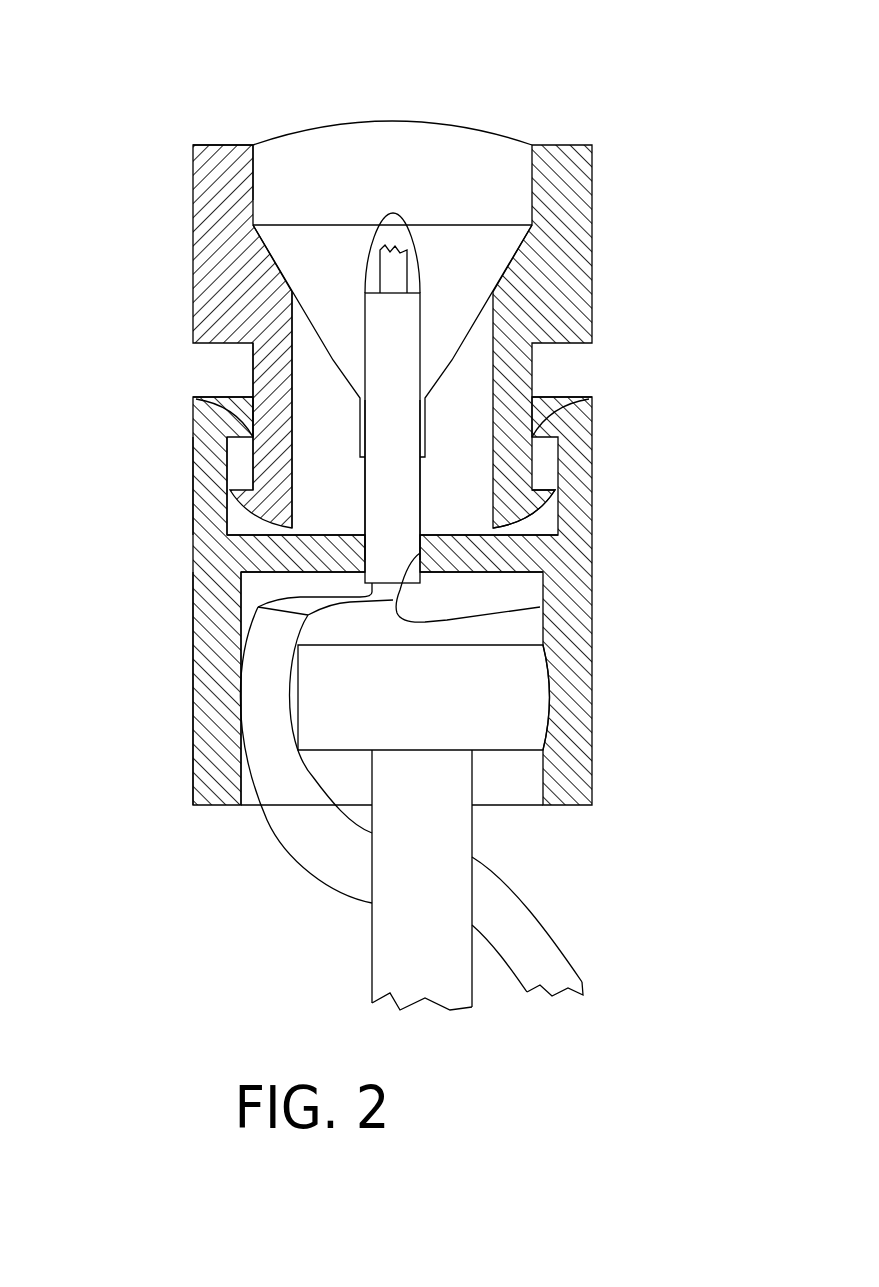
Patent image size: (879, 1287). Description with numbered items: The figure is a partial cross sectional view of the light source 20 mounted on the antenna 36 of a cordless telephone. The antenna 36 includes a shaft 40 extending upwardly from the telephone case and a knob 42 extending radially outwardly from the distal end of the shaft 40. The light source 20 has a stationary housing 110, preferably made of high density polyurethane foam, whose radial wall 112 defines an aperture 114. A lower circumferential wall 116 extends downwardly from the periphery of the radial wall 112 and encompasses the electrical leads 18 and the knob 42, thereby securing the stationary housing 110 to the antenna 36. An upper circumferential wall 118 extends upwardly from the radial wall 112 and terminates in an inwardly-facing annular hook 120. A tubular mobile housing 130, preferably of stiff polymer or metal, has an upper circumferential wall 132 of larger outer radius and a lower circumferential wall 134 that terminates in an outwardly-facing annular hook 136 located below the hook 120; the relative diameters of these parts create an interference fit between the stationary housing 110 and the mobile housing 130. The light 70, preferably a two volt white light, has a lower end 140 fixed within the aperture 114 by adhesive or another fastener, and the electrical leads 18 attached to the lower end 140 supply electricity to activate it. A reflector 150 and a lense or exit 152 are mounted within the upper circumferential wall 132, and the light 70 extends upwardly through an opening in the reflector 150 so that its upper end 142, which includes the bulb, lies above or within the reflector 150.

The light source 20 is at (655, 68).
The lense or exit 152 is at (313, 127).
The upper end 142 is at (397, 237).
The upper circumferential wall 132 is at (210, 163).
The tubular mobile housing 130 is at (193, 220).
The lower circumferential wall 134 is at (262, 370).
The inwardly-facing annular hook or engaging member 120 is at (212, 413).
The upper circumferential wall 118 is at (207, 468).
The radial wall 112 is at (260, 550).
The stationary housing 110 is at (193, 587).
The lower circumferential wall 116 is at (210, 677).
The reflector 150 is at (467, 333).
The light 70 is at (422, 355).
The lower end 140 is at (400, 508).
The outwardly-facing annular hook or engaging member 136 is at (527, 515).
The aperture 114 is at (540, 607).
The knob 42 is at (497, 720).
The electrical leads 18 is at (293, 858).
The shaft 40 is at (392, 923).
The antenna 36 is at (372, 987).